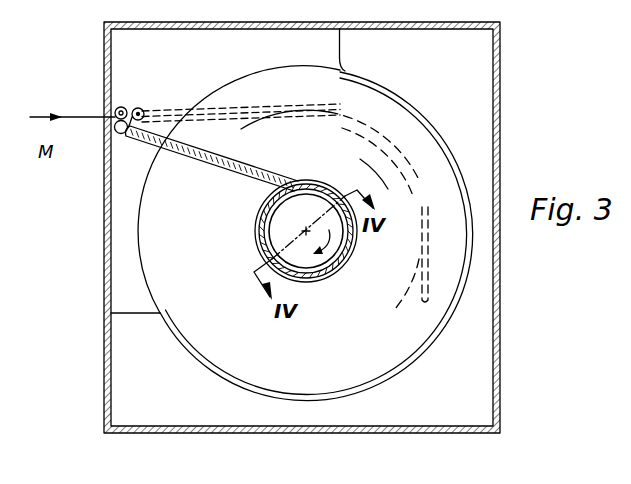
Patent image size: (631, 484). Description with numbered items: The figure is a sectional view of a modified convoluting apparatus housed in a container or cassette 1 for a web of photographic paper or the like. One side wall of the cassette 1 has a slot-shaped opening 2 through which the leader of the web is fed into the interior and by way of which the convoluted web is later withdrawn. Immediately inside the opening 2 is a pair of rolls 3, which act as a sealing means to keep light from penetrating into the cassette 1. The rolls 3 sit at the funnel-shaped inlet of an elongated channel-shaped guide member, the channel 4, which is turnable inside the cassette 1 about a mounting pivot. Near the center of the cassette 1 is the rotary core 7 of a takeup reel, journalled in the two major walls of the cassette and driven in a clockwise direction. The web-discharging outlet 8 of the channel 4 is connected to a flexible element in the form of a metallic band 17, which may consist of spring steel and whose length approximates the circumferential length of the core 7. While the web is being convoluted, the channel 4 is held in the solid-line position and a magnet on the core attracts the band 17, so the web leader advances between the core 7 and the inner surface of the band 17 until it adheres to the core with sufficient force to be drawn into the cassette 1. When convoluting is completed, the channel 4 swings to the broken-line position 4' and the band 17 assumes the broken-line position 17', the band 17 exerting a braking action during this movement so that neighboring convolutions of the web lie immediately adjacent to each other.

The cassette 1 is at (499, 82).
The opening 2 is at (116, 113).
The rolls 3 is at (140, 108).
The channel 4 is at (212, 158).
The broken-line position of channel 4' is at (281, 129).
The rotary core 7 is at (268, 226).
The outlet 8 is at (300, 183).
The metallic band 17 is at (318, 241).
The broken-line position of metallic band 17' is at (430, 258).